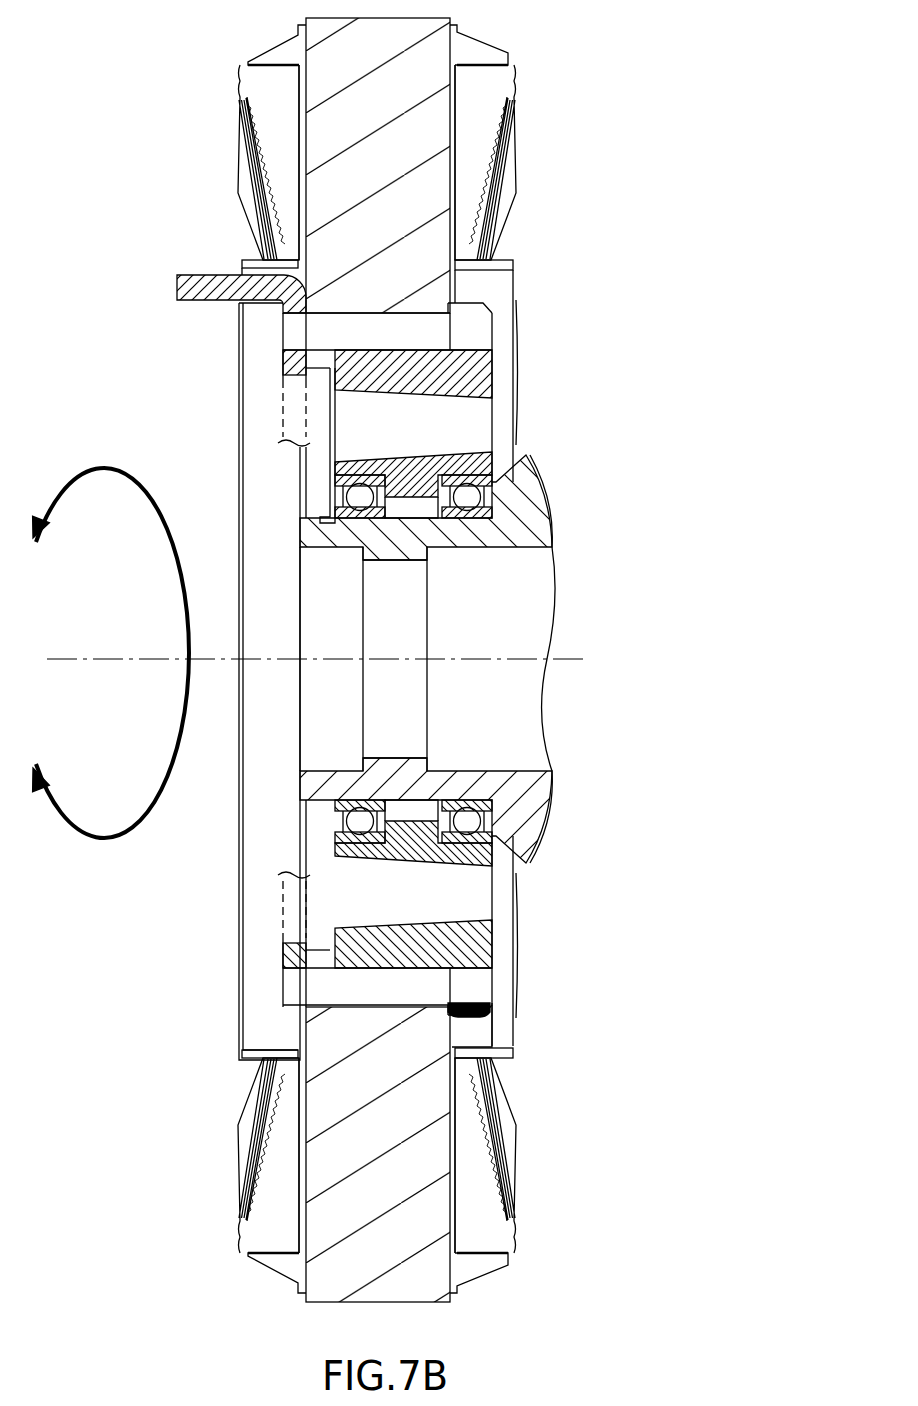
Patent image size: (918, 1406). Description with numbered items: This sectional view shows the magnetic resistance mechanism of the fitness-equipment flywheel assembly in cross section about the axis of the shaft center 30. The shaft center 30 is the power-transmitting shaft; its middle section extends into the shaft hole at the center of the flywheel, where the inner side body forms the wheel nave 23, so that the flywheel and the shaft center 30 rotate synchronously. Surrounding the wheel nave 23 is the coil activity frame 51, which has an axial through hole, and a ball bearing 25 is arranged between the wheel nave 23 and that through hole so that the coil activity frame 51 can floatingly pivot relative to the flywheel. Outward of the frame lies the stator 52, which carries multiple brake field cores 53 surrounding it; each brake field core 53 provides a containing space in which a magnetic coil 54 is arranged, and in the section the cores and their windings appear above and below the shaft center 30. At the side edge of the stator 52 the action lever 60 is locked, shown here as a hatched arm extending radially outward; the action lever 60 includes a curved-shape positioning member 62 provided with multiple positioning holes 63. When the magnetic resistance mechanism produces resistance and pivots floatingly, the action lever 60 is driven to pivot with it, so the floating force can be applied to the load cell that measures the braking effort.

The wheel nave 23 is at (500, 530).
The ball bearing 25 is at (360, 495).
The shaft center 30 is at (525, 620).
The coil activity frame 51 is at (445, 385).
The stator 52 is at (413, 240).
The brake field core 53 is at (468, 52).
The magnetic coil 54 is at (502, 198).
The action lever 60 is at (173, 268).
The positioning member 62 is at (296, 362).
The positioning hole 63 is at (296, 330).